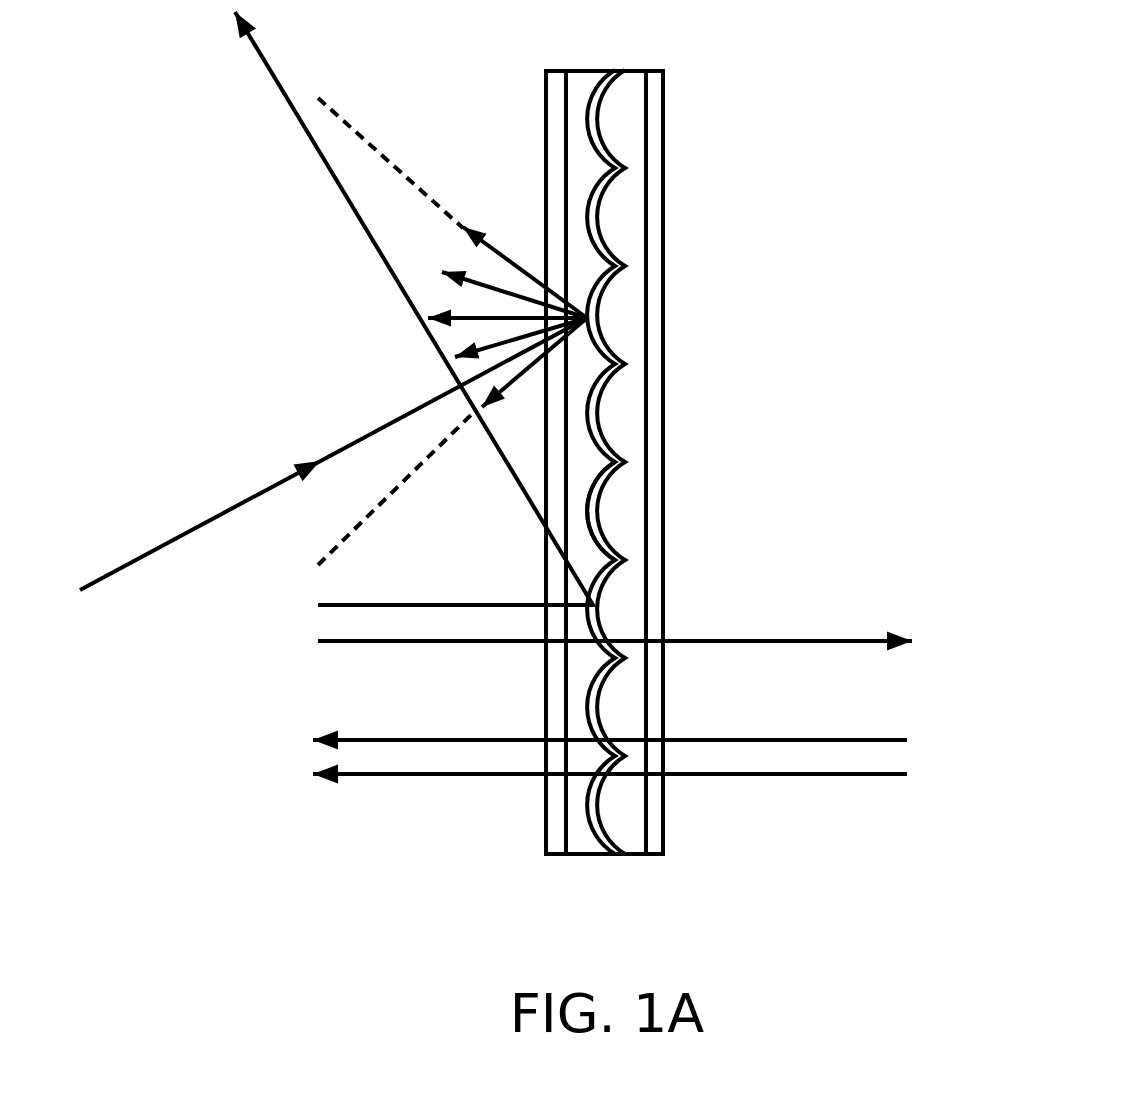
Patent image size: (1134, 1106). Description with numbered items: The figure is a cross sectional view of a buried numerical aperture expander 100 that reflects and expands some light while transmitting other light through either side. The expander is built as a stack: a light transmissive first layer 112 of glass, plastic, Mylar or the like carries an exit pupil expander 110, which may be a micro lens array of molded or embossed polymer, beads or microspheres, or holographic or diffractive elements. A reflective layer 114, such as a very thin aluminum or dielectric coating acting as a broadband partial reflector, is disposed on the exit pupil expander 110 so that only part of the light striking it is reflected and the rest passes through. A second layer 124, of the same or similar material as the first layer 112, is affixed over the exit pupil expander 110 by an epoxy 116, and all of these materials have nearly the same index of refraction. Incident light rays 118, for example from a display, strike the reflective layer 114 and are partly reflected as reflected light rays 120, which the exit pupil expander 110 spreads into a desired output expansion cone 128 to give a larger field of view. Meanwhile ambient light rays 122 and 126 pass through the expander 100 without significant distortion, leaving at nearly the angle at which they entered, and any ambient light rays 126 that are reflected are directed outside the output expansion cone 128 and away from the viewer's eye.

The buried numerical aperture expander 100 is at (868, 138).
The exit pupil expander 110 is at (630, 218).
The first layer 112 is at (667, 102).
The reflective layer 114 is at (603, 183).
The epoxy 116 is at (587, 465).
The incident light rays 118 is at (370, 433).
The reflected light rays 120 is at (520, 267).
The light rays 122 is at (810, 738).
The second layer 124 is at (545, 102).
The light rays 126 is at (367, 643).
The output expansion cone 128 is at (332, 110).